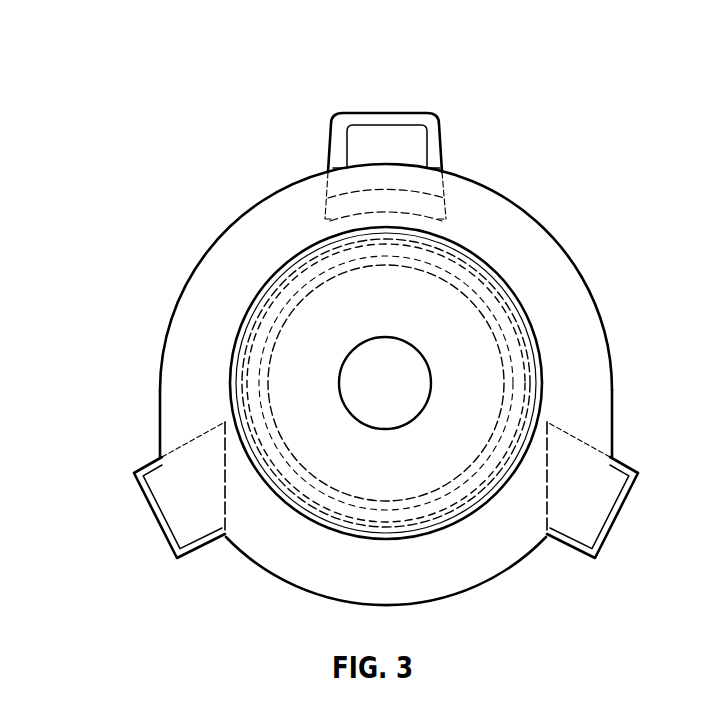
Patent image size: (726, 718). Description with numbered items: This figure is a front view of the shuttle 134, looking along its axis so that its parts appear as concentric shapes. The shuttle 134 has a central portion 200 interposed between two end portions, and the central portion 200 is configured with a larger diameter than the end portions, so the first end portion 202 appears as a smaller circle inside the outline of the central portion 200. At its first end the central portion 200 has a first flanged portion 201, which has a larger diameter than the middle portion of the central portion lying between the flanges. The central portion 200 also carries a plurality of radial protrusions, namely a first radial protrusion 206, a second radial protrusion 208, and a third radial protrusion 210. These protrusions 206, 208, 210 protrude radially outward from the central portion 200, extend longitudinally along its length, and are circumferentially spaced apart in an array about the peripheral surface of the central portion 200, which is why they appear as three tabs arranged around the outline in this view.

The shuttle 134 is at (110, 158).
The central portion 200 is at (243, 215).
The first flanged portion 201 is at (505, 195).
The first end portion 202 is at (498, 273).
The first radial protrusion 206 is at (382, 112).
The second radial protrusion 208 is at (630, 469).
The third radial protrusion 210 is at (134, 472).